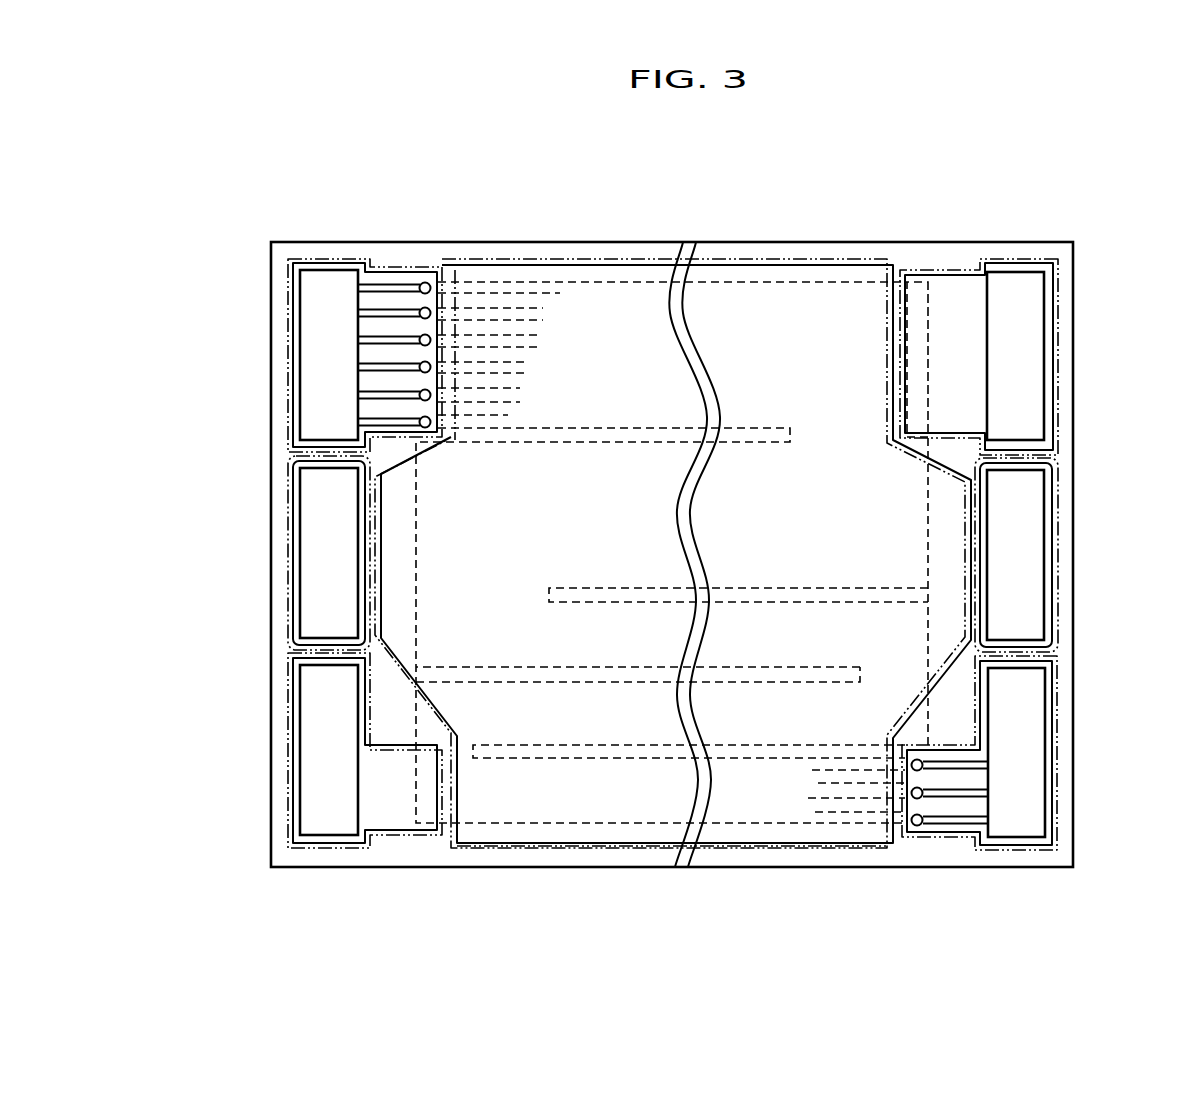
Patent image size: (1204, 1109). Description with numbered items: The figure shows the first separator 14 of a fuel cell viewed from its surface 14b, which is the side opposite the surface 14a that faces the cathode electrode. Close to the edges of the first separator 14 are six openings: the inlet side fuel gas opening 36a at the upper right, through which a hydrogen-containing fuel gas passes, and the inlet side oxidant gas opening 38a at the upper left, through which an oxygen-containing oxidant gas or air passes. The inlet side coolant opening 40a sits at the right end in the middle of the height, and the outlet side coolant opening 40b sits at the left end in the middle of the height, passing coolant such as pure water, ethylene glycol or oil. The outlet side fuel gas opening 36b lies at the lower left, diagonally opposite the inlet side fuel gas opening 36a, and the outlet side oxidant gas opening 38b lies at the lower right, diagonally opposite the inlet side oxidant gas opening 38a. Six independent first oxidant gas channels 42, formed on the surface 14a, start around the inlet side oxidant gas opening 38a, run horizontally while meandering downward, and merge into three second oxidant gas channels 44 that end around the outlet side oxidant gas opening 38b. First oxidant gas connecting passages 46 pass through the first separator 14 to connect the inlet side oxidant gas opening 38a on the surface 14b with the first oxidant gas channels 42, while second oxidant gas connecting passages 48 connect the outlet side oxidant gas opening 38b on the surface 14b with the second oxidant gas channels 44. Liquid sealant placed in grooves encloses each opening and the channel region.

The first separator 14 is at (762, 242).
The surface 14a is at (620, 266).
The surface 14b is at (898, 266).
The inlet side fuel gas opening 36a is at (1020, 357).
The outlet side fuel gas opening 36b is at (325, 735).
The inlet side oxidant gas opening 38a is at (320, 355).
The outlet side oxidant gas opening 38b is at (1025, 743).
The inlet side coolant opening 40a is at (1020, 557).
The outlet side coolant opening 40b is at (325, 550).
The first oxidant gas channels 42 is at (494, 282).
The second oxidant gas channels 44 is at (887, 850).
The first oxidant gas connecting passages 46 is at (420, 311).
The second oxidant gas connecting passages 48 is at (925, 765).